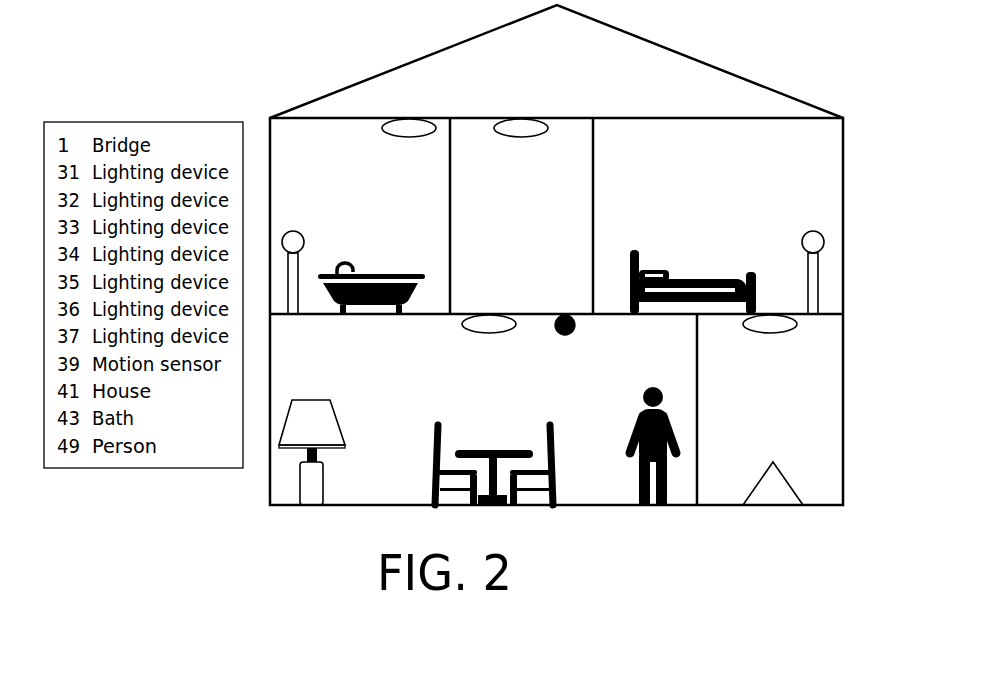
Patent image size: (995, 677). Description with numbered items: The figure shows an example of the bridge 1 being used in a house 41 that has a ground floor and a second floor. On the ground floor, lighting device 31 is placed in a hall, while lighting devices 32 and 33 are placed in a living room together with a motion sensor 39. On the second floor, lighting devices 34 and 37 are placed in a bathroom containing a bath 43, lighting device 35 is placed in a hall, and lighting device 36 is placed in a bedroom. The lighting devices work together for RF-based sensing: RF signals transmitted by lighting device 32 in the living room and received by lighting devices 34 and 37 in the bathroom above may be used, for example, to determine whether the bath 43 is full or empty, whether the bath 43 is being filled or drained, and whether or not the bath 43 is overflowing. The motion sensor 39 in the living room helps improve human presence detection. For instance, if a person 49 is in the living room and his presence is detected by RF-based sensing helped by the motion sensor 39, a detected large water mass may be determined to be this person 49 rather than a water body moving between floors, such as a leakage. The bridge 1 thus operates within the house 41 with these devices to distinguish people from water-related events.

The bridge 1 is at (780, 500).
The lighting device 31 is at (771, 333).
The lighting device 32 is at (488, 333).
The lighting device 33 is at (311, 400).
The lighting device 34 is at (408, 137).
The lighting device 35 is at (521, 137).
The lighting device 36 is at (812, 230).
The lighting device 37 is at (294, 230).
The motion sensor 39 is at (563, 335).
The house 41 is at (727, 72).
The bath 43 is at (375, 274).
The person 49 is at (651, 387).